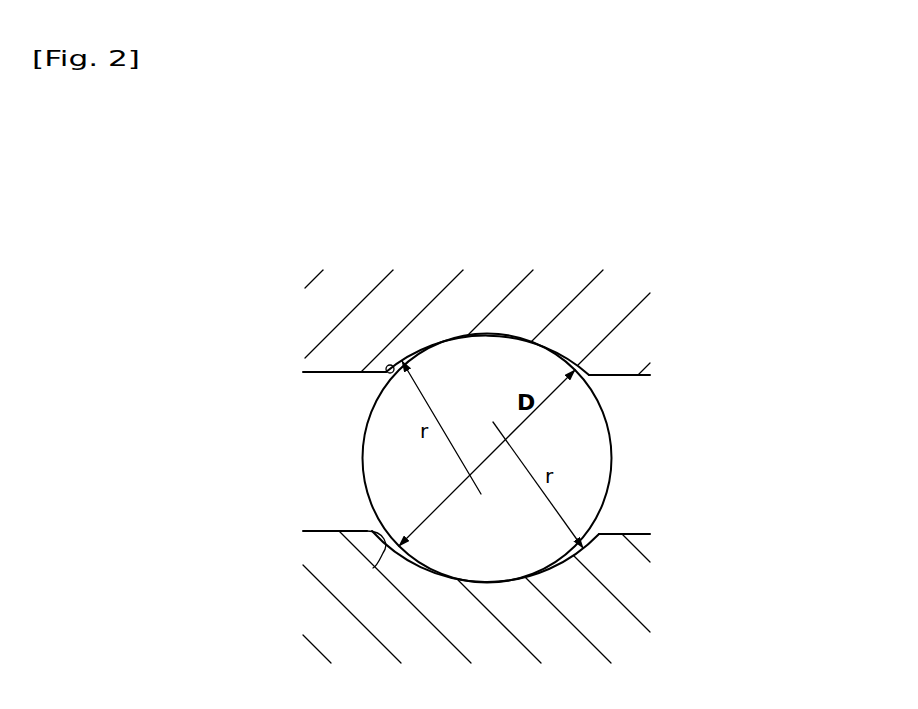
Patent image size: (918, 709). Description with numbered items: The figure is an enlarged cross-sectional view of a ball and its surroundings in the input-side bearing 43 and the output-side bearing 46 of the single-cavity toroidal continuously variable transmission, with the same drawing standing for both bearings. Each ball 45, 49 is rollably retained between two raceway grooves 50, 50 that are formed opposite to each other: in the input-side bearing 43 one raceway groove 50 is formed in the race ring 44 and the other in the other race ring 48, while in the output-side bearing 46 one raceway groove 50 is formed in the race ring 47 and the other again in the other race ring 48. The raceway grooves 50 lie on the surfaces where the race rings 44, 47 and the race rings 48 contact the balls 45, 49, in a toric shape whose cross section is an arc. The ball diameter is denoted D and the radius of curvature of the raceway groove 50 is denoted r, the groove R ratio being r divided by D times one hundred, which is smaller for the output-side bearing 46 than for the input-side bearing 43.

The input-side bearing 43 is at (476, 260).
The output-side bearing 46 is at (465, 260).
The race ring 44 is at (584, 337).
The race ring 47 is at (598, 324).
The ball 45 is at (553, 458).
The ball 49 is at (588, 452).
The other race ring 48 is at (620, 580).
The raceway groove 50 is at (383, 368).